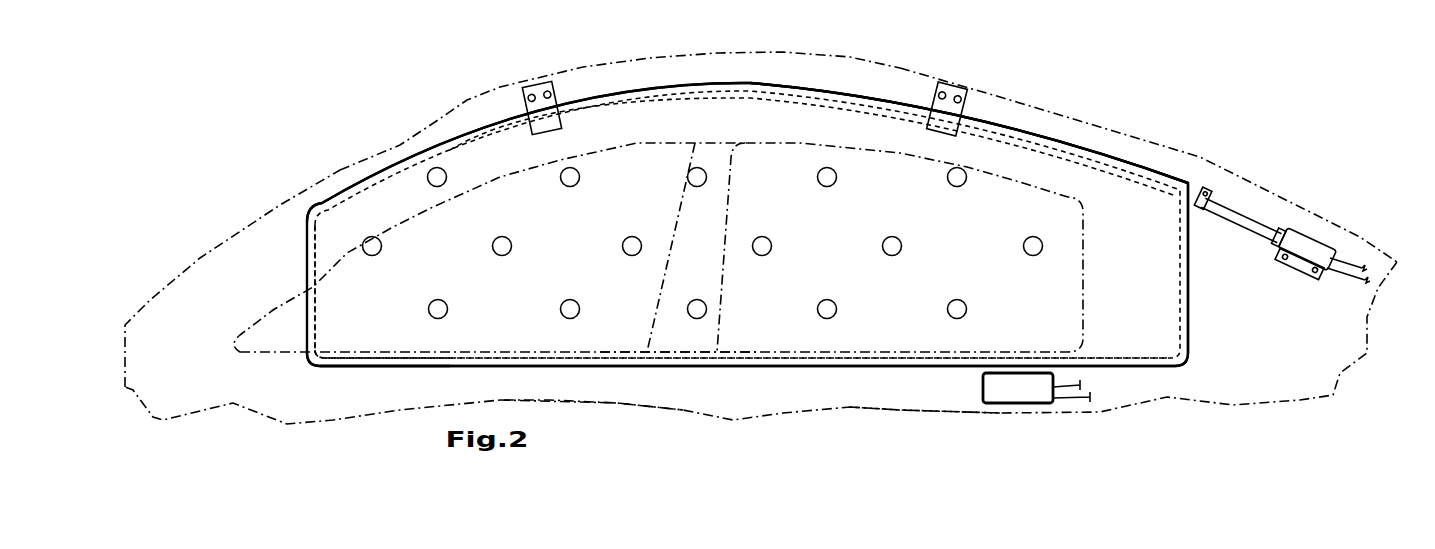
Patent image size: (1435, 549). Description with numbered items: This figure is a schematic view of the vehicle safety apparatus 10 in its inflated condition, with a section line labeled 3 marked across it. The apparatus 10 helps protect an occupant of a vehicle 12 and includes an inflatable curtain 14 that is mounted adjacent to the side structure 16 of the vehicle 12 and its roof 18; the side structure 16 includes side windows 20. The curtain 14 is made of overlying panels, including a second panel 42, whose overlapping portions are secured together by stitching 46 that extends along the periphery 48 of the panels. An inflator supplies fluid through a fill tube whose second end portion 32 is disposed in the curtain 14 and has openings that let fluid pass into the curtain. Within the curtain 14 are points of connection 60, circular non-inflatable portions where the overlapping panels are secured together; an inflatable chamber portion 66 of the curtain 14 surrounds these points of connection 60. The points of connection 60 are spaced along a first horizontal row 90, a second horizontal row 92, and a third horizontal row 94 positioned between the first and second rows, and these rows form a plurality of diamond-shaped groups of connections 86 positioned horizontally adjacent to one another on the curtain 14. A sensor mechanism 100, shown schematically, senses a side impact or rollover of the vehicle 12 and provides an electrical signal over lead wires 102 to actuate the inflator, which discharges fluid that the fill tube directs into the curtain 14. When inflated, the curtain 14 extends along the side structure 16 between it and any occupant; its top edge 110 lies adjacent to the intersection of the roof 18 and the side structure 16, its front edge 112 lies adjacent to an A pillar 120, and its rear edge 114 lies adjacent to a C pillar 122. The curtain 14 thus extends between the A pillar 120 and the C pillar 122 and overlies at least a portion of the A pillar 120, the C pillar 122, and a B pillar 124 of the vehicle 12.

The vehicle safety apparatus 10 is at (440, 72).
The vehicle 12 is at (437, 123).
The inflatable curtain 14 is at (333, 330).
The side structure 16 is at (793, 392).
The roof 18 is at (913, 68).
The side windows 20 is at (593, 343).
The second end portion 32 is at (607, 100).
The second panel 42 is at (870, 337).
The stitching 46 is at (433, 357).
The periphery 48 is at (457, 365).
The points of connection 60 is at (427, 180).
The inflatable chamber portion 66 is at (402, 283).
The groups of connections 86 is at (533, 217).
The first horizontal row 90 is at (402, 163).
The second horizontal row 92 is at (347, 253).
The third horizontal row 94 is at (330, 335).
The sensor mechanism 100 is at (1020, 390).
The lead wires 102 is at (1347, 260).
The top edge 110 is at (670, 87).
The front edge 112 is at (350, 303).
The rear edge 114 is at (1190, 278).
The A pillar 120 is at (282, 212).
The C pillar 122 is at (1243, 357).
The B pillar 124 is at (673, 342).
The section line 3- 3 is at (760, 70).